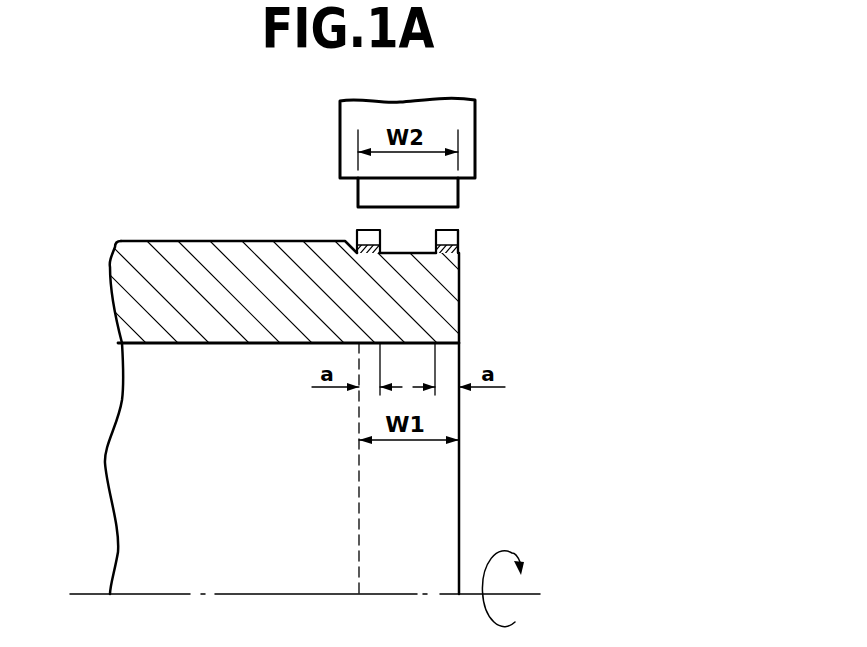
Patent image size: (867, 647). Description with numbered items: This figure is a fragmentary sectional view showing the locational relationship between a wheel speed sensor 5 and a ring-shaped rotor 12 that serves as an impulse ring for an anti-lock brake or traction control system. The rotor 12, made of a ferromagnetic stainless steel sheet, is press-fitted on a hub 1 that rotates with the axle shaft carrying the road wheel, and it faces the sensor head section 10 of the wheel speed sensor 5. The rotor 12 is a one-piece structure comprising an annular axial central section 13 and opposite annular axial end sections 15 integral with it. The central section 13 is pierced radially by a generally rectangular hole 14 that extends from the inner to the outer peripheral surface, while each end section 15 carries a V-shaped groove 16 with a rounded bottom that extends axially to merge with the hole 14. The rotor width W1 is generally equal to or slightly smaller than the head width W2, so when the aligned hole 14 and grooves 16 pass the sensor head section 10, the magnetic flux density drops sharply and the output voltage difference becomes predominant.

The hub 1 is at (135, 280).
The wheel speed sensor 5 is at (486, 117).
The sensor head section 10 is at (457, 190).
The rotor 12 is at (472, 236).
The annular axial central section 13 is at (420, 228).
The hole 14 is at (402, 237).
The annular axial end section 15 is at (367, 253).
The groove 16 is at (357, 231).